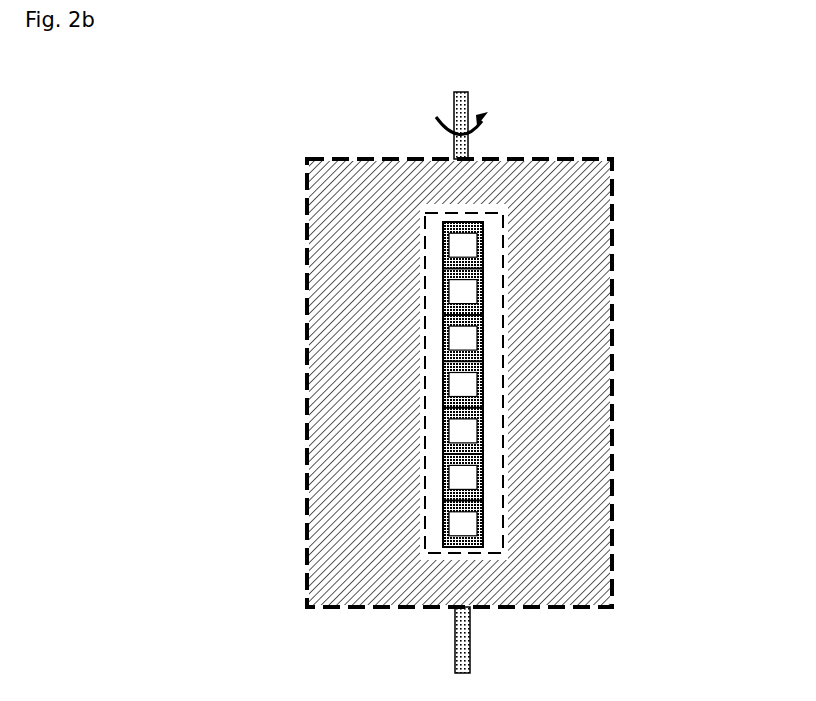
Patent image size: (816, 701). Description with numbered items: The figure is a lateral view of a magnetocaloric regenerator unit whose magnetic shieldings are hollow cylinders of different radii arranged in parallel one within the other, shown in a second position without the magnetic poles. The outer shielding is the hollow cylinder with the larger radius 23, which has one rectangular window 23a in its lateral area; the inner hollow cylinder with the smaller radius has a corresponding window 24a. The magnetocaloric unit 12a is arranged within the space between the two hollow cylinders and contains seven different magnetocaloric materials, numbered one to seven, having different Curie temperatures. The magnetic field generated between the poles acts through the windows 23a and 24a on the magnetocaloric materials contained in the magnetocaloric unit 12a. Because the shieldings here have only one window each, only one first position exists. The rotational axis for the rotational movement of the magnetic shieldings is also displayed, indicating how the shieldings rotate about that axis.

The hollow cylinder with the larger radius 23 is at (612, 350).
The window 23a is at (505, 295).
The window 24a is at (504, 247).
The magnetocaloric unit 12a is at (482, 431).